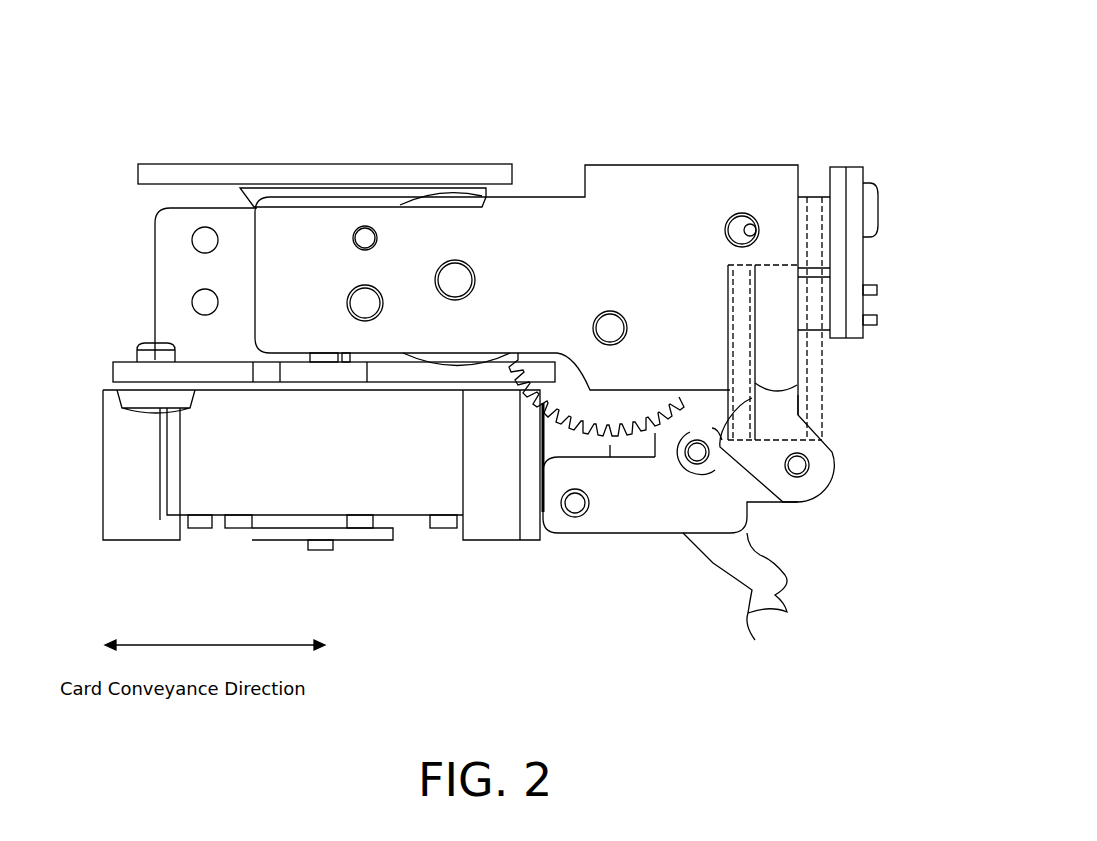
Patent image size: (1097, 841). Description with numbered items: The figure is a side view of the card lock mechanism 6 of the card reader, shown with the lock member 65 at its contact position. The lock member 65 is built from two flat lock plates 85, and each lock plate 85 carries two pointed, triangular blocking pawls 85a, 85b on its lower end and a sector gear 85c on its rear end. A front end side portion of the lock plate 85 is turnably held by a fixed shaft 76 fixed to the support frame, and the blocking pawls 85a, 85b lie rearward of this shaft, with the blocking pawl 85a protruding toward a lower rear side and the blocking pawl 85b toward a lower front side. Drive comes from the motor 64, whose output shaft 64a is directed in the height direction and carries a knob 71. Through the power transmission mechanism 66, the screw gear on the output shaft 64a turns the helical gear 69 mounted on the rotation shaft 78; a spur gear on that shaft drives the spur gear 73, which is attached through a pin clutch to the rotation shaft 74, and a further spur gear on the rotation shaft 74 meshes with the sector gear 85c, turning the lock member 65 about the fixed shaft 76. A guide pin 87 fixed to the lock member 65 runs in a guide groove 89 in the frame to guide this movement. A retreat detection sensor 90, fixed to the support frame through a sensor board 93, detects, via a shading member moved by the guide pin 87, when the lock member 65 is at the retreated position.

The card lock mechanism 6 is at (886, 103).
The motor 64 is at (232, 528).
The output shaft 64a is at (335, 200).
The lock member 65 is at (709, 561).
The power transmission mechanism 66 is at (532, 132).
The helical gear 69 is at (453, 198).
The knob 71 is at (392, 165).
The spur gear 73 is at (545, 400).
The rotation shaft 74 is at (610, 320).
The fixed shaft 76 is at (810, 470).
The rotation shaft 78 is at (468, 277).
The lock plate 85 is at (709, 561).
The blocking pawl 85a is at (762, 606).
The blocking pawl 85b is at (784, 608).
The sector gear 85c is at (612, 450).
The guide pin 87 is at (722, 400).
The guide groove 89 is at (738, 430).
The retreat detection sensor 90 is at (810, 318).
The sensor board 93 is at (855, 272).